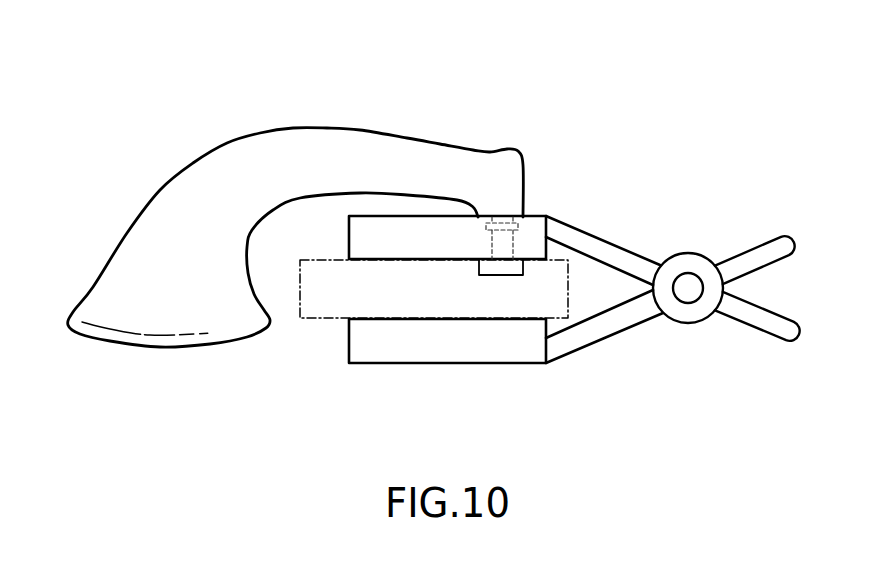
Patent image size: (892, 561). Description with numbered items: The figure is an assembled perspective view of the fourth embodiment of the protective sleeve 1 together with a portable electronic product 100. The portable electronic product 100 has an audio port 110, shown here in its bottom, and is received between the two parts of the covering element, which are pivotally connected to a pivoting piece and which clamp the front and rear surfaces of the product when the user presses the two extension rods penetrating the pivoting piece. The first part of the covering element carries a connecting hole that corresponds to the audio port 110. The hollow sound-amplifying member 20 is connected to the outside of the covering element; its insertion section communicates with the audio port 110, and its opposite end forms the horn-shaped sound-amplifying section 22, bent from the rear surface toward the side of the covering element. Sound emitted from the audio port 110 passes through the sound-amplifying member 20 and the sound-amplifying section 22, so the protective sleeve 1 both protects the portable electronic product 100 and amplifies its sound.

The protective sleeve 1 is at (478, 68).
The sound-amplifying member 20 is at (272, 153).
The sound-amplifying section 22 is at (177, 325).
The portable electronic product 100 is at (318, 305).
The audio port 110 is at (505, 268).